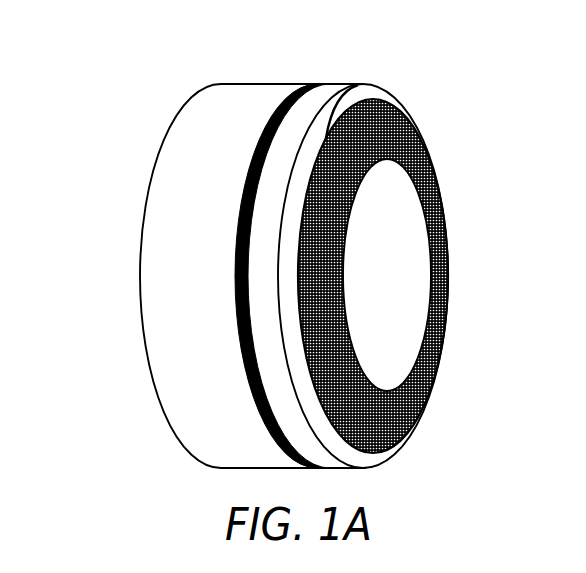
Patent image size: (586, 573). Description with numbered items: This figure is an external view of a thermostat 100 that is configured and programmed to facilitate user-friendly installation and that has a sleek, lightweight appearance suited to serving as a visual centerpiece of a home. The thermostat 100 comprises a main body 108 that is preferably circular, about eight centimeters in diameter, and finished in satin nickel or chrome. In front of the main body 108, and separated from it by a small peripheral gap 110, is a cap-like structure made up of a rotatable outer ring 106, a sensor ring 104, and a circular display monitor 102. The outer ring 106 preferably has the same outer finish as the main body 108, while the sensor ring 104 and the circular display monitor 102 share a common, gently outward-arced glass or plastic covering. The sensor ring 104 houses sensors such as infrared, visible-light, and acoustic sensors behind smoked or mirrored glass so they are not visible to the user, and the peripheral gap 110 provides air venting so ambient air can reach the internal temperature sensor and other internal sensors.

The thermostat 100 is at (82, 75).
The circular display monitor 102 is at (420, 250).
The sensor ring 104 is at (408, 132).
The rotatable outer ring 106 is at (373, 91).
The main body 108 is at (238, 95).
The peripheral gap 110 is at (313, 82).